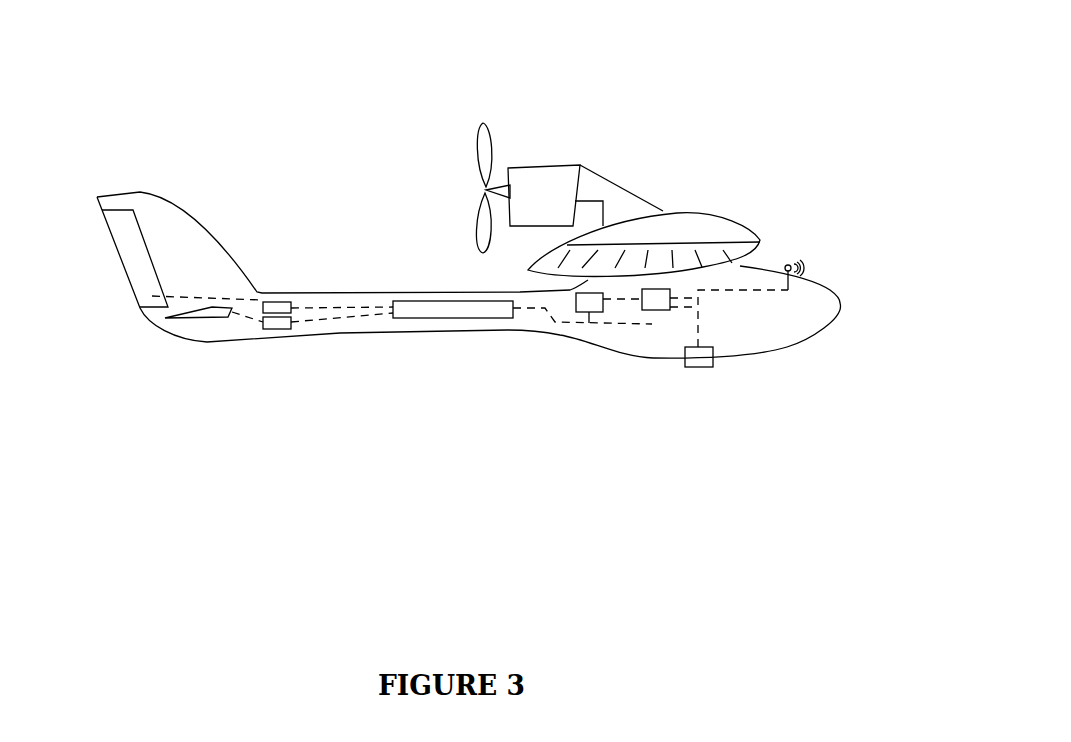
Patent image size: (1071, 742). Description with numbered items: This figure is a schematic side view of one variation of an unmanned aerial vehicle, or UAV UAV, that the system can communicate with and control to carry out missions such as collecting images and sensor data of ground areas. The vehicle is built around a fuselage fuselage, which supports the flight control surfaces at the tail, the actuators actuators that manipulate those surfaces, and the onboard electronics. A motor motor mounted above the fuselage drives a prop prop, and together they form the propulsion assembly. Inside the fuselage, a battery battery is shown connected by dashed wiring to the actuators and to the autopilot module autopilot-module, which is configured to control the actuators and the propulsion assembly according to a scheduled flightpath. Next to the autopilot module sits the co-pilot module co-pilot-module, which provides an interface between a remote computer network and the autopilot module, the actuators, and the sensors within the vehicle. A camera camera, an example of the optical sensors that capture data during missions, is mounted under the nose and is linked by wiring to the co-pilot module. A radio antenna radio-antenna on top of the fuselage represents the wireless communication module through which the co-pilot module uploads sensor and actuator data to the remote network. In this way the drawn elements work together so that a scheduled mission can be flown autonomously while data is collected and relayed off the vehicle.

The unmanned aerial vehicle UAV is at (730, 118).
The element prop is at (488, 103).
The element motor is at (560, 143).
The radio antenna radio-antenna is at (823, 217).
The element actuators is at (284, 360).
The element battery is at (453, 337).
The autopilot module autopilot-module is at (575, 325).
The co-pilot module co-pilot-module is at (653, 322).
The element camera is at (699, 379).
The element fuselage is at (788, 355).